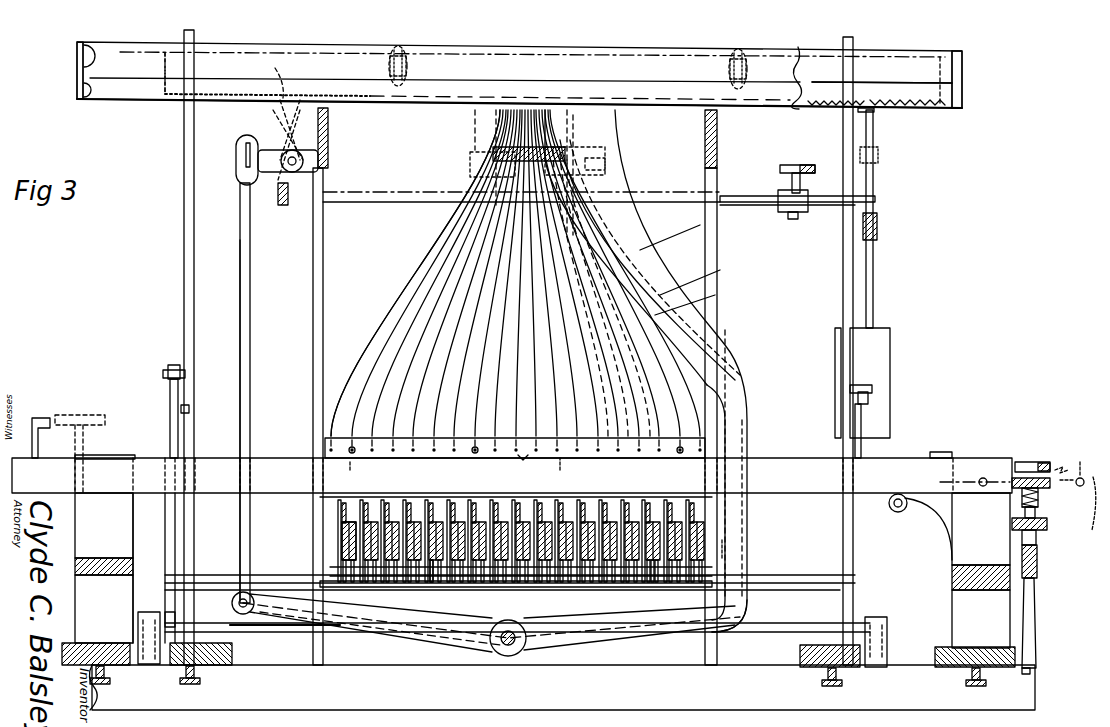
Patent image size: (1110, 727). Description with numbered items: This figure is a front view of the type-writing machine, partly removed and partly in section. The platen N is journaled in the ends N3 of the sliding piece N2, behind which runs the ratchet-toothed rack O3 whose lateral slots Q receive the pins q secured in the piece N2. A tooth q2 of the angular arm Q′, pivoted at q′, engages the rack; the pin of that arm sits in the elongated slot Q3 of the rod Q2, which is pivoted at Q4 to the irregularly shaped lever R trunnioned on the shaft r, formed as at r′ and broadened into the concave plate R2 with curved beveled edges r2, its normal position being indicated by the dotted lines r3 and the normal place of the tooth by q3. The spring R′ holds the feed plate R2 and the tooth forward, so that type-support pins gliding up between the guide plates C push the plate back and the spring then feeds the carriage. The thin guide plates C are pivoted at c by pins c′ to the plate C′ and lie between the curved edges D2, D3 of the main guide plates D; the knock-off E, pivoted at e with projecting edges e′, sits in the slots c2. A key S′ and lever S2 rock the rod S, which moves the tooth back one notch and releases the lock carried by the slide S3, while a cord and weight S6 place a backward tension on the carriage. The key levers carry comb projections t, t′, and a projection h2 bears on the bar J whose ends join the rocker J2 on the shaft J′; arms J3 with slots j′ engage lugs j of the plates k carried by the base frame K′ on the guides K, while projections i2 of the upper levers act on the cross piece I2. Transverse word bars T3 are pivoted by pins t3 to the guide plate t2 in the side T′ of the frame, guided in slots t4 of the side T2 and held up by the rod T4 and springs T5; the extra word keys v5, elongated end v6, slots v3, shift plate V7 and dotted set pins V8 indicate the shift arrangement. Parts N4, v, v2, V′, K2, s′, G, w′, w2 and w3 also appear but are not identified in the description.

The platen N is at (120, 106).
The sliding piece N2 is at (948, 112).
The ends of sliding piece N3 is at (84, 104).
The beam end boss N4 is at (84, 54).
The ratchet toothed rack O3 is at (162, 66).
The pins or screws q is at (722, 66).
The pivot of angular arm q′ is at (288, 175).
The tooth q2 is at (313, 100).
The tooth in forward position q3 is at (277, 72).
The lateral slots Q is at (577, 69).
The angular arm Q′ is at (257, 150).
The rod Q2 is at (240, 258).
The elongated slot Q3 is at (245, 162).
The pivot of rod Q4 is at (244, 191).
The roller v is at (397, 53).
The washer v2 is at (1034, 535).
The slot v3 is at (1042, 505).
The extra set of word keys v5 is at (80, 442).
The elongated end v6 is at (1028, 461).
The upright V′ is at (40, 417).
The cross bar or plate V7 is at (1082, 460).
The dotted set pins V8 is at (898, 452).
The guides and plates K is at (184, 250).
The base frame K′ is at (226, 665).
The cross rod K2 is at (304, 553).
The plates k is at (188, 684).
The irregularly shaped lever R is at (472, 650).
The spring R′ is at (328, 124).
The lever feed plate R2 is at (738, 342).
The shaft r is at (506, 650).
The formed portion of lever r′ is at (733, 634).
The curved beveled edges r2 is at (724, 294).
The dotted lines r3 is at (527, 150).
The rocking bar or rod S is at (797, 190).
The key S′ is at (795, 165).
The lever S2 is at (800, 183).
The slide S3 is at (858, 108).
The weight S6 is at (893, 434).
The stud s′ is at (278, 205).
The guide plates C is at (515, 273).
The plate C′ is at (521, 460).
The pivot c is at (565, 440).
The pins c′ is at (372, 442).
The slots c2 is at (486, 440).
The main guide plates D is at (539, 247).
The inner curved edge D2 is at (453, 238).
The inner curved edge D3 is at (365, 350).
The knock-off E is at (472, 182).
The pivot of knock-off e is at (470, 160).
The edges of knock-off e′ is at (498, 147).
The elevated side of frame T′ is at (542, 570).
The elevated side of frame T2 is at (104, 609).
The transverse bars or levers T3 is at (512, 475).
The rod T4 is at (898, 512).
The spring T5 is at (948, 548).
The projections t is at (396, 502).
The projections t′ is at (630, 502).
The guide plate t2 is at (440, 586).
The pin t3 is at (983, 478).
The slots t4 is at (542, 562).
The projection h2 is at (650, 586).
The cross bar or piece I2 is at (790, 575).
The projections i2 is at (725, 547).
The bar J is at (286, 632).
The shaft J′ is at (888, 625).
The rocker J2 is at (856, 590).
The arms J3 is at (175, 545).
The pins or lugs j is at (163, 371).
The slots or holes j′ is at (166, 370).
The base G is at (562, 687).
The screw nut w′ is at (1036, 569).
The screw shank w2 is at (1034, 628).
The screw foot w3 is at (1032, 664).